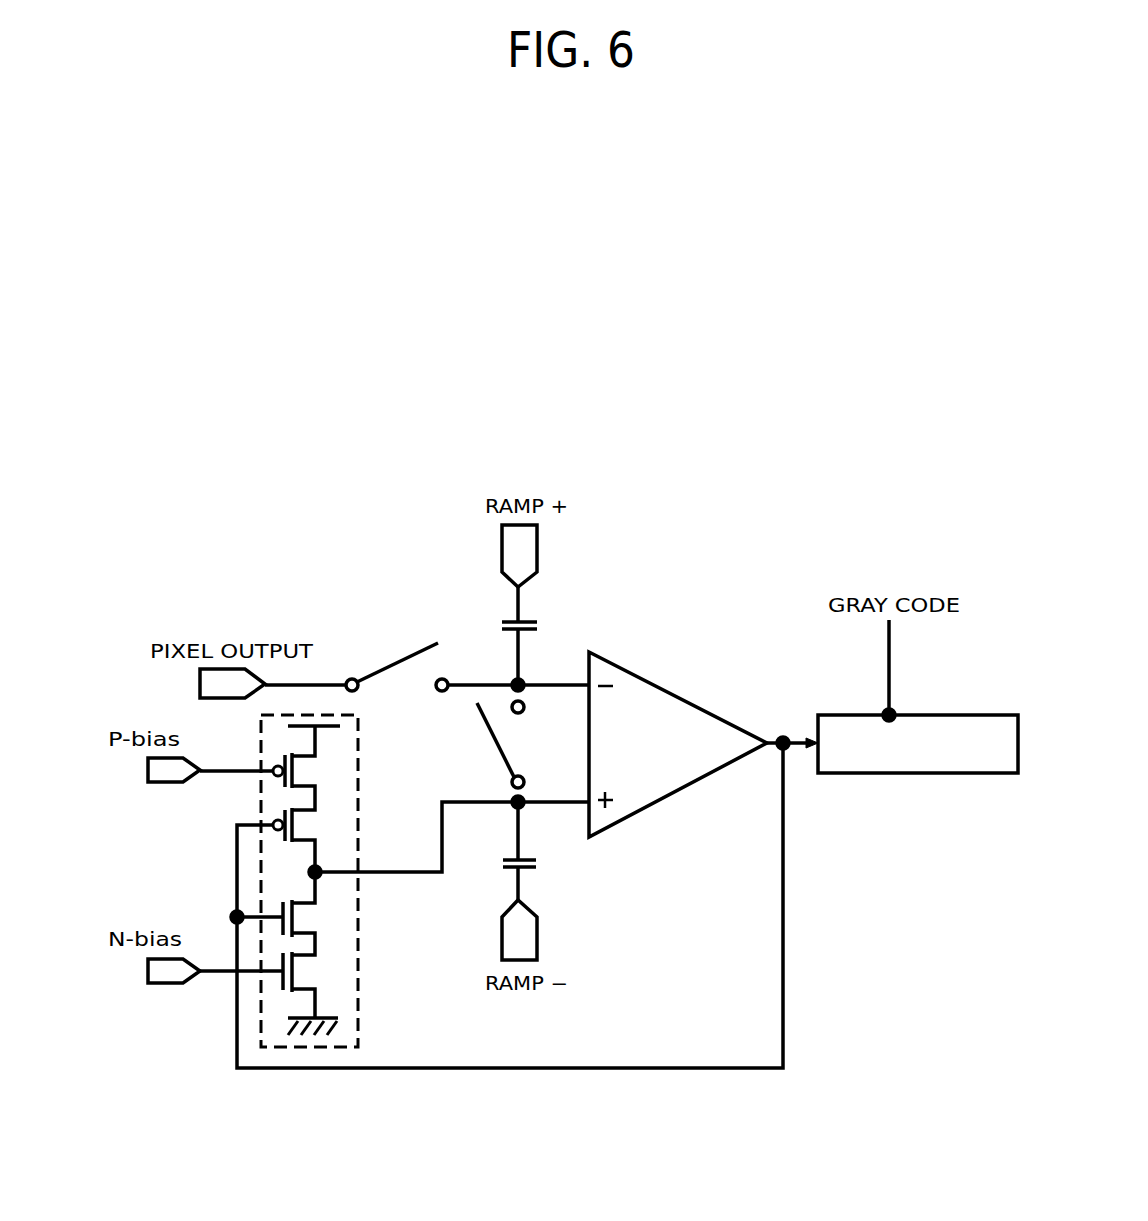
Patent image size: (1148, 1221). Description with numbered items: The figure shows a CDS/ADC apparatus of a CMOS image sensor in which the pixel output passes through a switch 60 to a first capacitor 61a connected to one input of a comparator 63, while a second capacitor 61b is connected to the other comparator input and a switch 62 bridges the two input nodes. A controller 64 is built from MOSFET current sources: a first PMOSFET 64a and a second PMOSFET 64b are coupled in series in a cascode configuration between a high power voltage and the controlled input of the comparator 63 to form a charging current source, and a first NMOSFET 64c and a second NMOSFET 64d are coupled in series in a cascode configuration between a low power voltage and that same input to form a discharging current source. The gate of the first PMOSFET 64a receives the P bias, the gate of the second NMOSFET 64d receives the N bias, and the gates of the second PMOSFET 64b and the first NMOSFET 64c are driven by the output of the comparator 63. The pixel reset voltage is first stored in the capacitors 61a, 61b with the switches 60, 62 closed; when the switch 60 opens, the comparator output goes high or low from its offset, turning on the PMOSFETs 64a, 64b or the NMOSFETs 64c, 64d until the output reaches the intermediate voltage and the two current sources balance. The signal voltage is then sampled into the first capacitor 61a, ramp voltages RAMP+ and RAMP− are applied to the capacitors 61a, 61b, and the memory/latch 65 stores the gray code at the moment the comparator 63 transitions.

The switch 60 is at (392, 660).
The first capacitor 61a is at (523, 618).
The second capacitor 61b is at (523, 868).
The switch 62 is at (497, 740).
The comparator 63 is at (677, 695).
The controller 64 is at (260, 880).
The first PMOSFET 64a is at (312, 768).
The second PMOSFET 64b is at (312, 818).
The first NMOSFET 64c is at (312, 927).
The second NMOSFET 64d is at (312, 980).
The memory/latch 65 is at (932, 713).